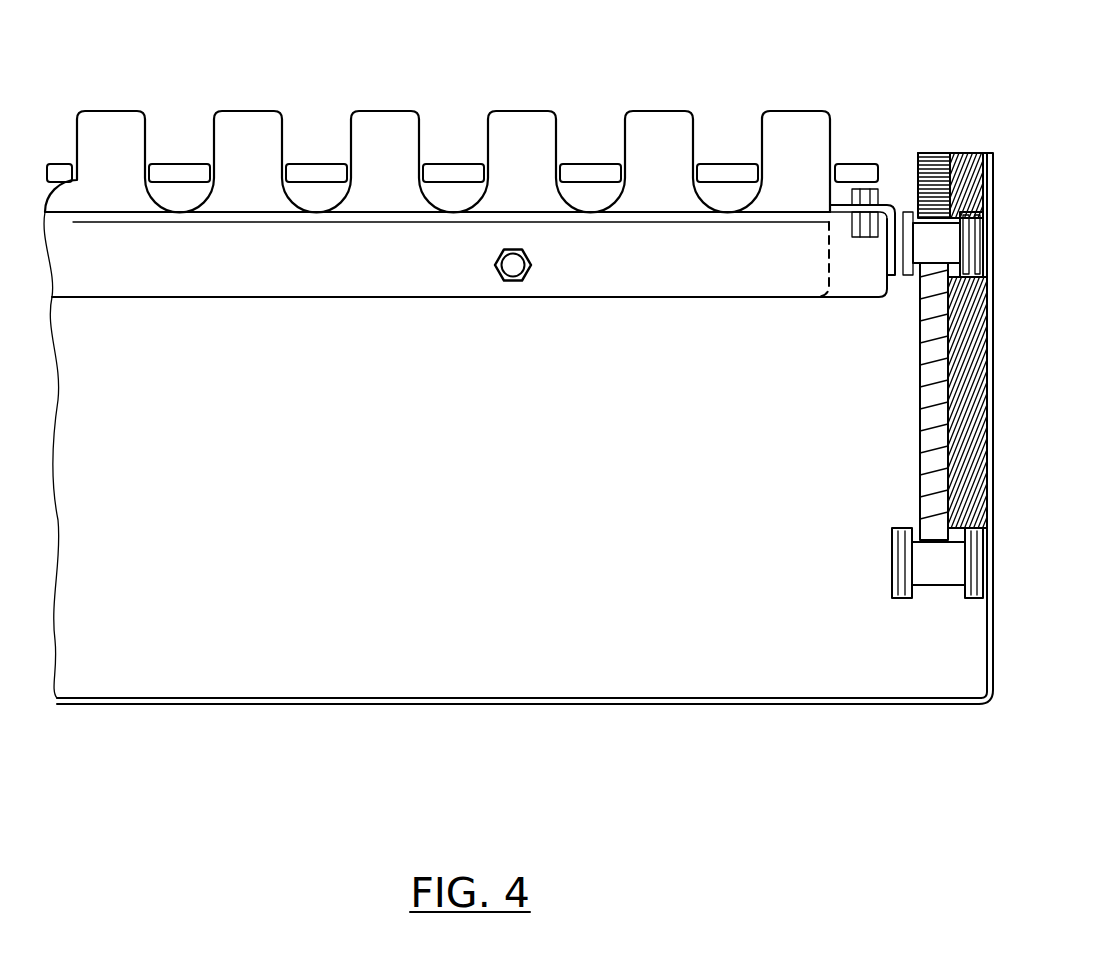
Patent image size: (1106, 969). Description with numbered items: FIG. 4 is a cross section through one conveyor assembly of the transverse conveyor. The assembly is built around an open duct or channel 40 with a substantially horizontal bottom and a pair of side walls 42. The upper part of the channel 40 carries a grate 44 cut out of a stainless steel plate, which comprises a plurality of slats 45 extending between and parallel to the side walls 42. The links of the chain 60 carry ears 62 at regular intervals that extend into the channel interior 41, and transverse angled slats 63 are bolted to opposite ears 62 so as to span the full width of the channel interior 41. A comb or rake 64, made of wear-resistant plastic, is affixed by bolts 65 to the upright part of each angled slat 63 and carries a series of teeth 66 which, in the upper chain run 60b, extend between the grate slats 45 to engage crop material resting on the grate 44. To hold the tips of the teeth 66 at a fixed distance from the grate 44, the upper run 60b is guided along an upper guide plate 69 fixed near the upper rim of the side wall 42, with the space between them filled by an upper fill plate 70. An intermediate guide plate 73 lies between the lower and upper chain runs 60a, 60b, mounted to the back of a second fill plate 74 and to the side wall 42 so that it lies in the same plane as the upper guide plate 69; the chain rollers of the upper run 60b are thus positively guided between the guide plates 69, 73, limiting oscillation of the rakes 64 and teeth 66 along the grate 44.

The channel 40 is at (515, 725).
The channel interior 41 is at (338, 705).
The side wall 42 is at (997, 443).
The grate 44 is at (587, 142).
The grate slats 45 is at (180, 163).
The chain 60 is at (930, 577).
The lower chain run 60a is at (898, 570).
The upper chain run 60b is at (945, 243).
The ears 62 is at (890, 200).
The transverse angled slats 63 is at (847, 282).
The rake 64 is at (295, 280).
The bolts 65 is at (515, 277).
The teeth 66 is at (245, 118).
The upper guide plate 69 is at (935, 153).
The upper fill plate 70 is at (967, 153).
The intermediate guide plate 73 is at (923, 415).
The second fill plate 74 is at (993, 377).